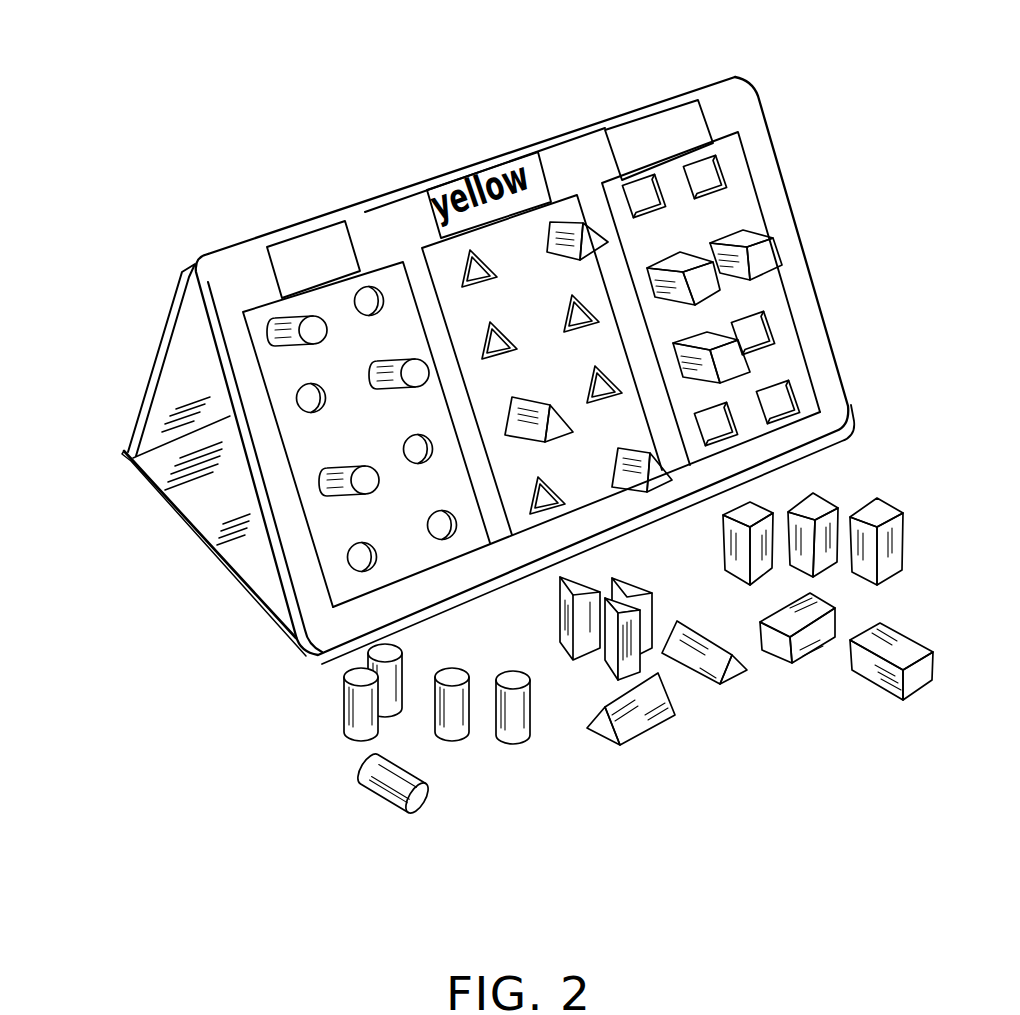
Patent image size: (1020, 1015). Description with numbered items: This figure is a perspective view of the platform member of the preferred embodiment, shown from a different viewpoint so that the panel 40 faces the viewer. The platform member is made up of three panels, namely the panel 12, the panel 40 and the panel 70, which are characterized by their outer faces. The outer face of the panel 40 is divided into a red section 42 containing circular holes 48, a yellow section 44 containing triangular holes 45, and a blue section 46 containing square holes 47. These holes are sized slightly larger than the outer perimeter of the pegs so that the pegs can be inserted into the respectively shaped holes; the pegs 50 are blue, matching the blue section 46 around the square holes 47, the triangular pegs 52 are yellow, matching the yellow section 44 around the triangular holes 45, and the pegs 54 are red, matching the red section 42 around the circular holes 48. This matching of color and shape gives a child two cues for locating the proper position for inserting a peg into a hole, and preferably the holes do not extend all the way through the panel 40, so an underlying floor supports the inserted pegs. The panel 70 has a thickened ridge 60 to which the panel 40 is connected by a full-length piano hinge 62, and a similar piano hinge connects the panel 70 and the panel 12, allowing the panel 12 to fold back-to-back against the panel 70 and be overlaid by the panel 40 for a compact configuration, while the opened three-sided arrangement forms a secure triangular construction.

The panel 12 is at (215, 567).
The panel 40 is at (381, 245).
The red section 42 is at (315, 325).
The yellow section 44 is at (550, 224).
The triangular holes 45 is at (464, 272).
The blue section 46 is at (670, 178).
The square holes 47 is at (707, 175).
The circular holes 48 is at (172, 484).
The pegs 50 is at (888, 690).
The triangular pegs 52 is at (645, 745).
The pegs 54 is at (355, 787).
The thickened ridge 60 is at (192, 253).
The piano hinge 62 is at (243, 252).
The panel 70 is at (150, 373).